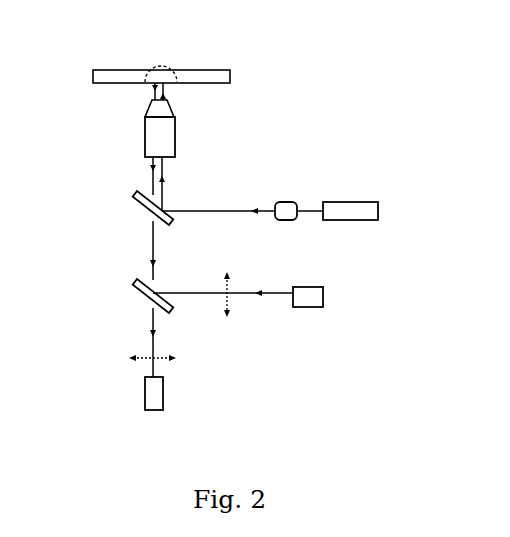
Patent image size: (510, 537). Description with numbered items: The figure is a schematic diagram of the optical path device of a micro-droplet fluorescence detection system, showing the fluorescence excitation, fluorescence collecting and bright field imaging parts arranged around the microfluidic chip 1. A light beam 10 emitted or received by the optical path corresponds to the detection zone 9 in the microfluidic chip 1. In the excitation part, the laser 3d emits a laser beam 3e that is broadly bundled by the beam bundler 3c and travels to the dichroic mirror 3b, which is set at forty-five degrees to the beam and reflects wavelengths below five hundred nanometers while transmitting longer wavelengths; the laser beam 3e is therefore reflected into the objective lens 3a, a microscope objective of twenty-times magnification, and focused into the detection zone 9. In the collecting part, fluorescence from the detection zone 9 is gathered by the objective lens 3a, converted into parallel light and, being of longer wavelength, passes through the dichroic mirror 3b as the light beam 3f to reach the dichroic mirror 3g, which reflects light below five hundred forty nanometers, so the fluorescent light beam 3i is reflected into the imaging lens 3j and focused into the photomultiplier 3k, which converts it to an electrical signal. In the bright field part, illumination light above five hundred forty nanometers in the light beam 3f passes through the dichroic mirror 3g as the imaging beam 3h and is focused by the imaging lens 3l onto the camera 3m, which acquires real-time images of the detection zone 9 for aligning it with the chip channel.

The microfluidic chip 1 is at (170, 79).
The detection zone 9 is at (177, 72).
The light beam 10 is at (171, 100).
The objective lens 3a is at (173, 137).
The dichroic mirror 3b is at (138, 212).
The beam bundler 3c is at (282, 194).
The laser 3d is at (337, 194).
The laser beam 3e is at (218, 200).
The light beam 3f is at (165, 250).
The dichroic mirror 3g is at (138, 296).
The imaging beam 3h is at (164, 342).
The fluorescent light beam 3i is at (223, 303).
The imaging lens 3j is at (234, 284).
The photomultiplier 3k is at (320, 297).
The imaging lens 3l is at (166, 362).
The camera 3m is at (170, 394).